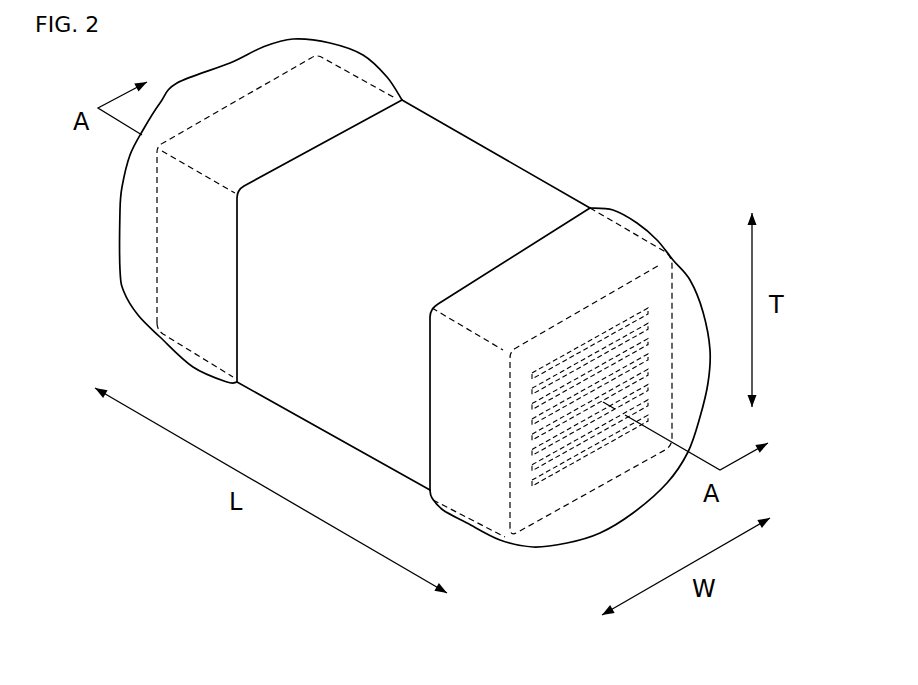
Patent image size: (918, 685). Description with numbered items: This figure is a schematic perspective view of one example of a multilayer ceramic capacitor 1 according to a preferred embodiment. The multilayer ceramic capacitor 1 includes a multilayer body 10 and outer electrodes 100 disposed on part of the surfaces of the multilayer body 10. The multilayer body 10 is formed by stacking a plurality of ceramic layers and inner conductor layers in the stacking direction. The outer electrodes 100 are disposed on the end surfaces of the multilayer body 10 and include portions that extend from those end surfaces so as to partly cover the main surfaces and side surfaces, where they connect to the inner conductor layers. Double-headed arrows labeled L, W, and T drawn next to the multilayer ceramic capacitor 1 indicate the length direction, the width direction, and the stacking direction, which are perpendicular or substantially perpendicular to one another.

The multilayer ceramic capacitor 1 is at (658, 117).
The multilayer body 10 is at (466, 162).
The outer electrodes 100 is at (620, 240).